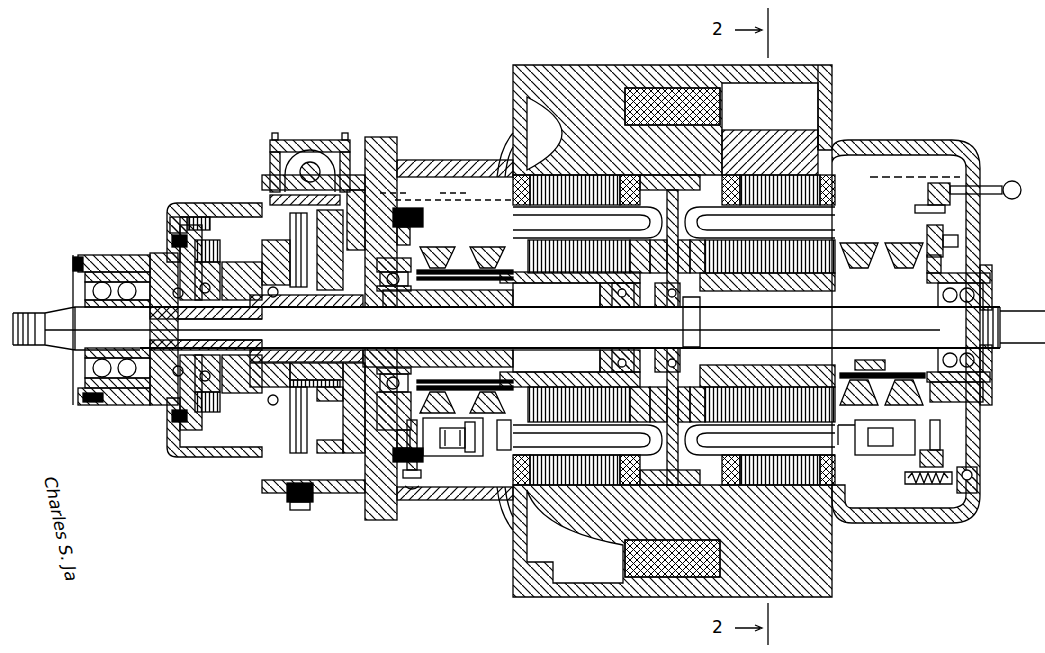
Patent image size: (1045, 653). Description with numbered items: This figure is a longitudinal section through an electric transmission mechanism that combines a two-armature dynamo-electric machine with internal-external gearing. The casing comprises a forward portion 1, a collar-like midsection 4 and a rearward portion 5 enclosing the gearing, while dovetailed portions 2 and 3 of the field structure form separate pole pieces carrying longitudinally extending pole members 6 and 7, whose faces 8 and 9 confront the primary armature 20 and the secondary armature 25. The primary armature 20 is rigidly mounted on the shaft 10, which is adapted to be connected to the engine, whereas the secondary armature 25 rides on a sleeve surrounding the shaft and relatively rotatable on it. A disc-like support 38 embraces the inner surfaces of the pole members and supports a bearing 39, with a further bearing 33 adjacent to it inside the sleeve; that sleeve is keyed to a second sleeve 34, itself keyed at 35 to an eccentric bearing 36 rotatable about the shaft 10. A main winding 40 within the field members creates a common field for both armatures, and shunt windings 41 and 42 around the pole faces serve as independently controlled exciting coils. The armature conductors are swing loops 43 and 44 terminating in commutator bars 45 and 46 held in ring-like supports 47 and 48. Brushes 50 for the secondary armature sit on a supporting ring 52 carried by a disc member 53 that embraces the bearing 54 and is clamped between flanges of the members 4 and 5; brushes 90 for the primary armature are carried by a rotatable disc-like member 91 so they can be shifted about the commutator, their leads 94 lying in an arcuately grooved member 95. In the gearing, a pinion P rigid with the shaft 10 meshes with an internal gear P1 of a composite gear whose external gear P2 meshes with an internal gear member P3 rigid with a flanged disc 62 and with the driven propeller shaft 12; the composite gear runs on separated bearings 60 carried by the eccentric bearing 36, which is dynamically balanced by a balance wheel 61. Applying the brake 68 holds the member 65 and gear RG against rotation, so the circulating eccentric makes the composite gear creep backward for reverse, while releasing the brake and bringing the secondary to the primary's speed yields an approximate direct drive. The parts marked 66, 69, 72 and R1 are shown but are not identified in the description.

The forward portion of the casing structure 1 is at (882, 145).
The dovetailed portion of the field structure 2 is at (601, 63).
The dovetailed portion of the field structure 3 is at (760, 66).
The collar-like casing section 4 is at (458, 163).
The rearward portion of the casing 5 is at (194, 200).
The pole member 6 is at (785, 132).
The pole member 7 is at (598, 543).
The pole face 8 is at (812, 482).
The pole face 9 is at (508, 512).
The shaft 10 is at (1028, 300).
The driven shaft 12 is at (75, 314).
The primary armature unit 20 is at (845, 448).
The secondary armature 25 is at (503, 452).
The bearing 33 is at (620, 327).
The sleeve 34 is at (460, 292).
The key 35 is at (340, 300).
The eccentric bearing 36 is at (280, 304).
The disc-like support 38 is at (672, 472).
The bearing 39 is at (670, 348).
The main winding 40 is at (649, 578).
The shunt winding 41 is at (836, 473).
The shunt winding 42 is at (500, 500).
The armature conductor 43 is at (692, 440).
The armature conductor 44 is at (474, 458).
The commutator bars 45 is at (880, 398).
The commutator bars 46 is at (450, 396).
The ring-like support 47 is at (882, 372).
The ring-like support 48 is at (518, 368).
The commutator brushes 50 is at (450, 449).
The supporting ring 52 is at (411, 480).
The disc member 53 is at (446, 192).
The bearing 54 is at (395, 292).
The separated bearings 60 is at (130, 398).
The balance wheel 61 is at (360, 168).
The flanged disc-like member 62 is at (170, 415).
The member 65 is at (312, 422).
The pinion pin 66 is at (312, 392).
The brake 68 is at (320, 485).
The bolt 69 is at (312, 162).
The bearing cap 72 is at (985, 403).
The commutator brushes 90 is at (888, 444).
The disc-like member 91 is at (928, 206).
The leads 94 is at (930, 488).
The arcuately grooved member 95 is at (1005, 182).
The pinion P is at (258, 337).
The internal gear P1 is at (235, 415).
The external gear P2 is at (228, 262).
The internal gear member P3 is at (178, 236).
The ring gear R1 is at (262, 462).
The gear RG is at (262, 200).